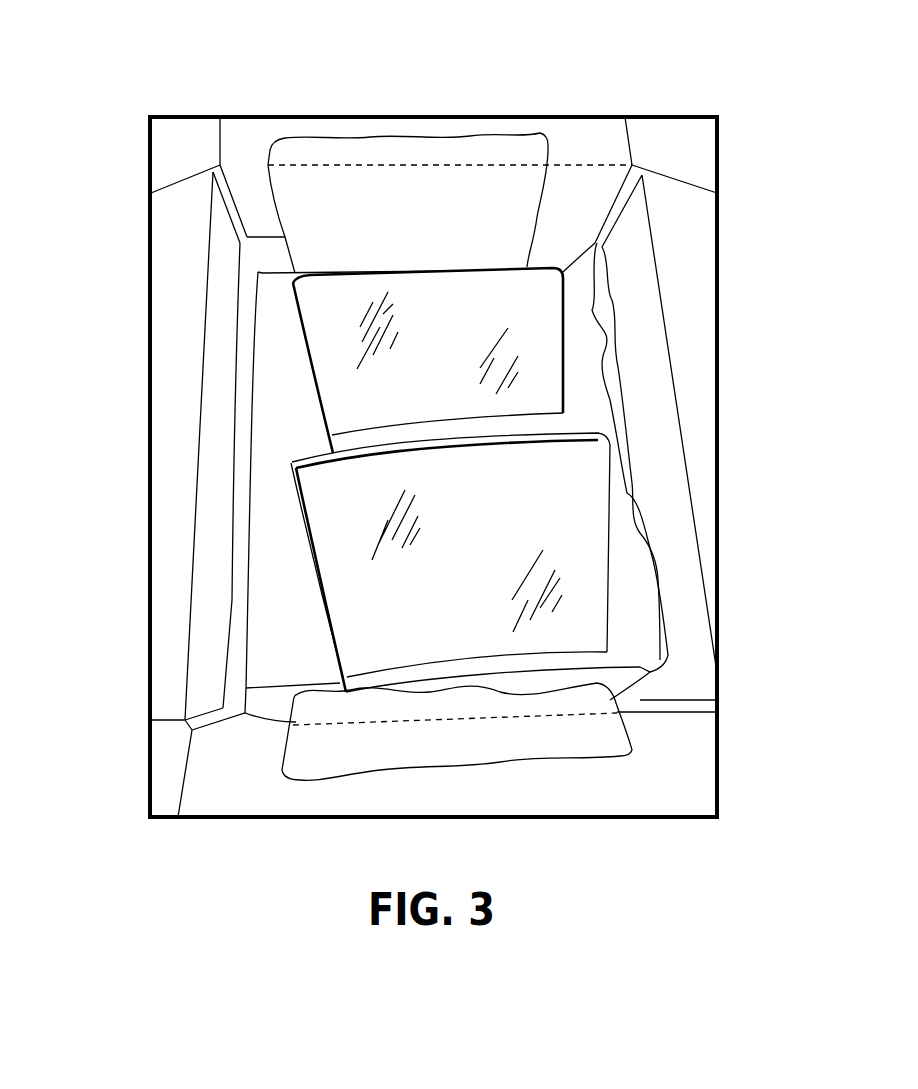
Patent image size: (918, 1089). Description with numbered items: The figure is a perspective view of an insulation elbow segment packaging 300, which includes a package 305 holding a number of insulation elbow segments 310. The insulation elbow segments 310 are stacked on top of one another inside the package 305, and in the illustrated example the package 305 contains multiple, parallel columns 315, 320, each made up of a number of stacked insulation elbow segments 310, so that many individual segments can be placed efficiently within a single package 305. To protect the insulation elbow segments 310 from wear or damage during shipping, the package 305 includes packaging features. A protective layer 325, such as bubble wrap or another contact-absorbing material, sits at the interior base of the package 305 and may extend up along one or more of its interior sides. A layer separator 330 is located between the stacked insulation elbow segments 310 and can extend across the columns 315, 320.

The insulation elbow segment packaging 300 is at (245, 86).
The package 305 is at (193, 237).
The insulation elbow segments 310 is at (338, 370).
The column 315 is at (568, 366).
The column 320 is at (612, 572).
The protective layer 325 is at (390, 183).
The layer separator 330 is at (265, 563).